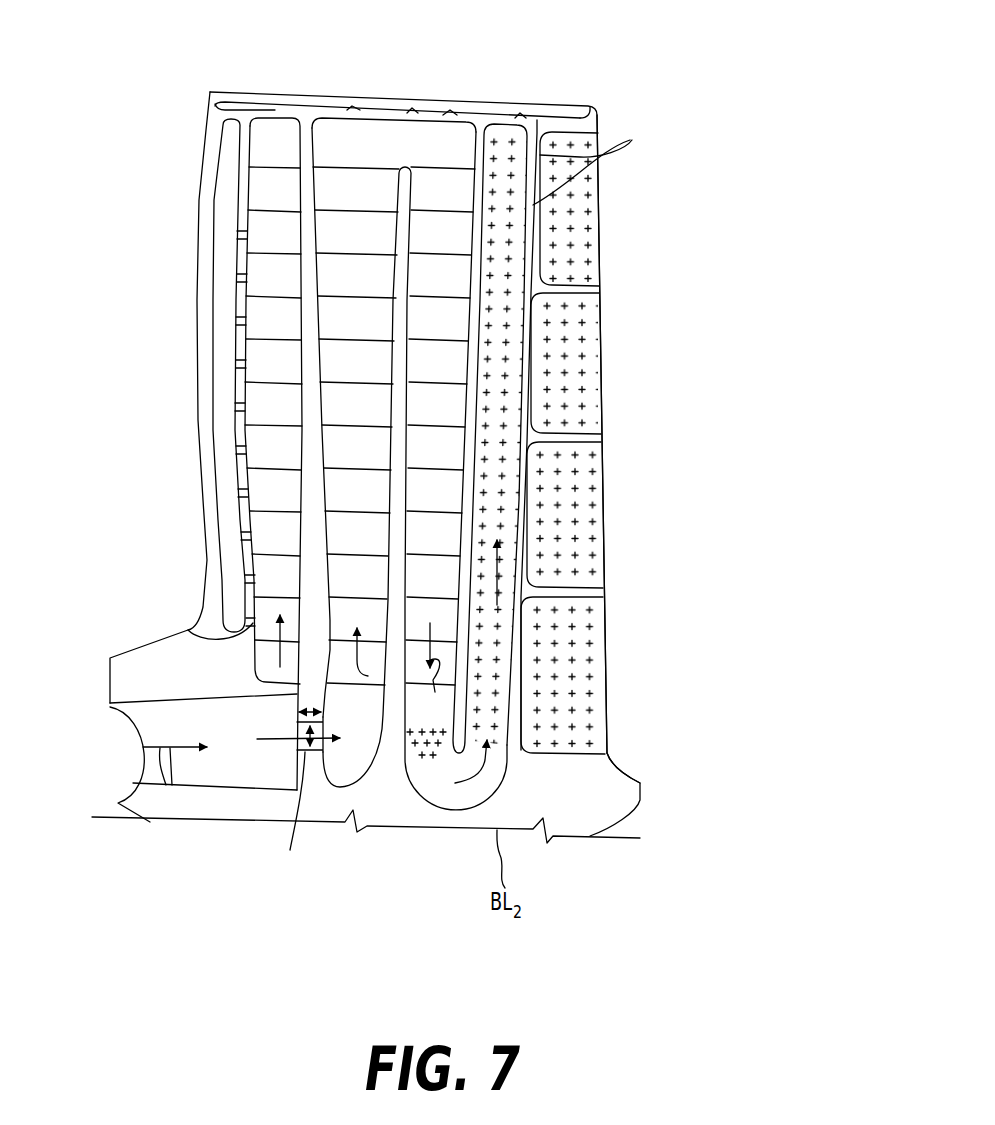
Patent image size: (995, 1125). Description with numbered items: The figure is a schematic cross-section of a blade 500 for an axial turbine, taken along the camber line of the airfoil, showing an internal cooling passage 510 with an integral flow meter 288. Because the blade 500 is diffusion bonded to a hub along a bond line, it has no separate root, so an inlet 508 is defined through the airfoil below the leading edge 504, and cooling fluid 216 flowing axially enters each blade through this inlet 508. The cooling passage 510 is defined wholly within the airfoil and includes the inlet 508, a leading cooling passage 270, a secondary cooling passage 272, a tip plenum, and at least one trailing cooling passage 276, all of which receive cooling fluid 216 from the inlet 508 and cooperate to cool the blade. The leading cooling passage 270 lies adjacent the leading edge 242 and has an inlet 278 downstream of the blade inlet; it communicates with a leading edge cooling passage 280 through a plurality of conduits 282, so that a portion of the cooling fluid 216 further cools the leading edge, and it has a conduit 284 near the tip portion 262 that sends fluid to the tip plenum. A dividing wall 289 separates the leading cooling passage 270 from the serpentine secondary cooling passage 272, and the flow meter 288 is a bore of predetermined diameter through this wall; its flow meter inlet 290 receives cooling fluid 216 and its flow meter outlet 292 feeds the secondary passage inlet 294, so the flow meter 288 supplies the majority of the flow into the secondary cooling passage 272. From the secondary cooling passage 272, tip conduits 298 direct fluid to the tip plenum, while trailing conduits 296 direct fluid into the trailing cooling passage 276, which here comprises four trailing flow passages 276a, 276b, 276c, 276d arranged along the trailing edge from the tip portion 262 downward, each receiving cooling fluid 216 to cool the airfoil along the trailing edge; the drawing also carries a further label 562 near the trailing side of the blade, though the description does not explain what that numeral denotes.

The blade 500 is at (782, 159).
The leading edge 504 is at (198, 303).
The leading edge cooling passage 280 is at (213, 213).
The leading cooling passage 270 is at (249, 109).
The conduits 282 is at (237, 449).
The conduit 284 is at (272, 98).
The dividing wall 289 is at (307, 575).
The secondary cooling passage 272 is at (410, 113).
The tip portion 262 is at (475, 115).
The tip conduits 298 is at (366, 108).
The cooling passage 510 is at (595, 110).
The trailing cooling passage 276 is at (687, 149).
The trailing flow passage 276a is at (593, 197).
The trailing flow passage 276b is at (595, 338).
The trailing flow passage 276c is at (602, 508).
The trailing flow passage 276d is at (602, 670).
The trailing conduits 296 is at (593, 159).
The leading edge 242 is at (607, 418).
The trailing edge 562 is at (664, 270).
The inlet 278 is at (256, 676).
The integral flow meter 288 is at (312, 698).
The flow meter outlet 292 is at (323, 752).
The flow meter inlet 290 is at (297, 731).
The secondary passage inlet 294 is at (110, 707).
The inlet 508 is at (140, 774).
The cooling fluid 216 is at (503, 560).